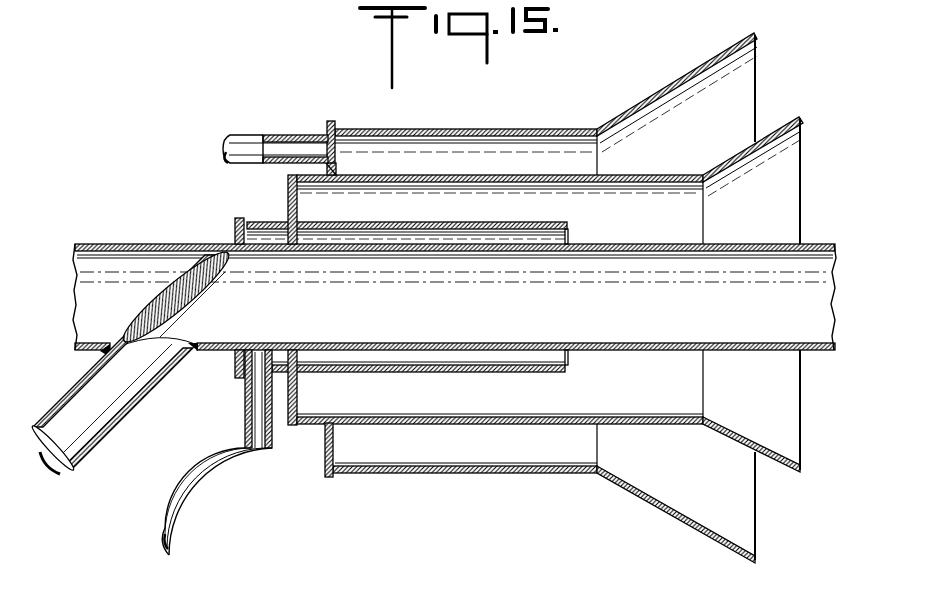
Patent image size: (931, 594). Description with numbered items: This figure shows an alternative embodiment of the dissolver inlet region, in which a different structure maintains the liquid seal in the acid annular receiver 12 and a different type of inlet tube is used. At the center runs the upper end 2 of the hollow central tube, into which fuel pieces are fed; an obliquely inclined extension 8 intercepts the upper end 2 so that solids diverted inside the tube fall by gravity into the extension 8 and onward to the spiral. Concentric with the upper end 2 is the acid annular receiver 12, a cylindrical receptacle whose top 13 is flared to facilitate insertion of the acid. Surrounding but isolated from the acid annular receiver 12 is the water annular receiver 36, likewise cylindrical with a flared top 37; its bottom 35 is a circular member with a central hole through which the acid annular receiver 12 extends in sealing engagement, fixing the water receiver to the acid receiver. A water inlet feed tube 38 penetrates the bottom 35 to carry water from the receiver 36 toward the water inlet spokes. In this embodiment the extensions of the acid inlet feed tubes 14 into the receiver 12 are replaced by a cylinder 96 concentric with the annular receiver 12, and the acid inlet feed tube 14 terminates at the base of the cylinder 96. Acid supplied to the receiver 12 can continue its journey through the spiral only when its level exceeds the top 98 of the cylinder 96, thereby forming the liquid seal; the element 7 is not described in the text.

The upper end 2 is at (811, 262).
The nozzle end of inlet tube 7 is at (145, 307).
The extension 8 is at (120, 400).
The acid annular receiver 12 is at (444, 175).
The top of the receiver 13 is at (781, 128).
The acid inlet feed tubes 14 is at (250, 505).
The bottom of the water annular receiver 35 is at (336, 160).
The water annular receiver 36 is at (411, 129).
The flared top 37 is at (676, 82).
The water inlet feed tubes 38 is at (249, 139).
The cylinder 96 is at (473, 222).
The top of the cylinder 98 is at (568, 233).